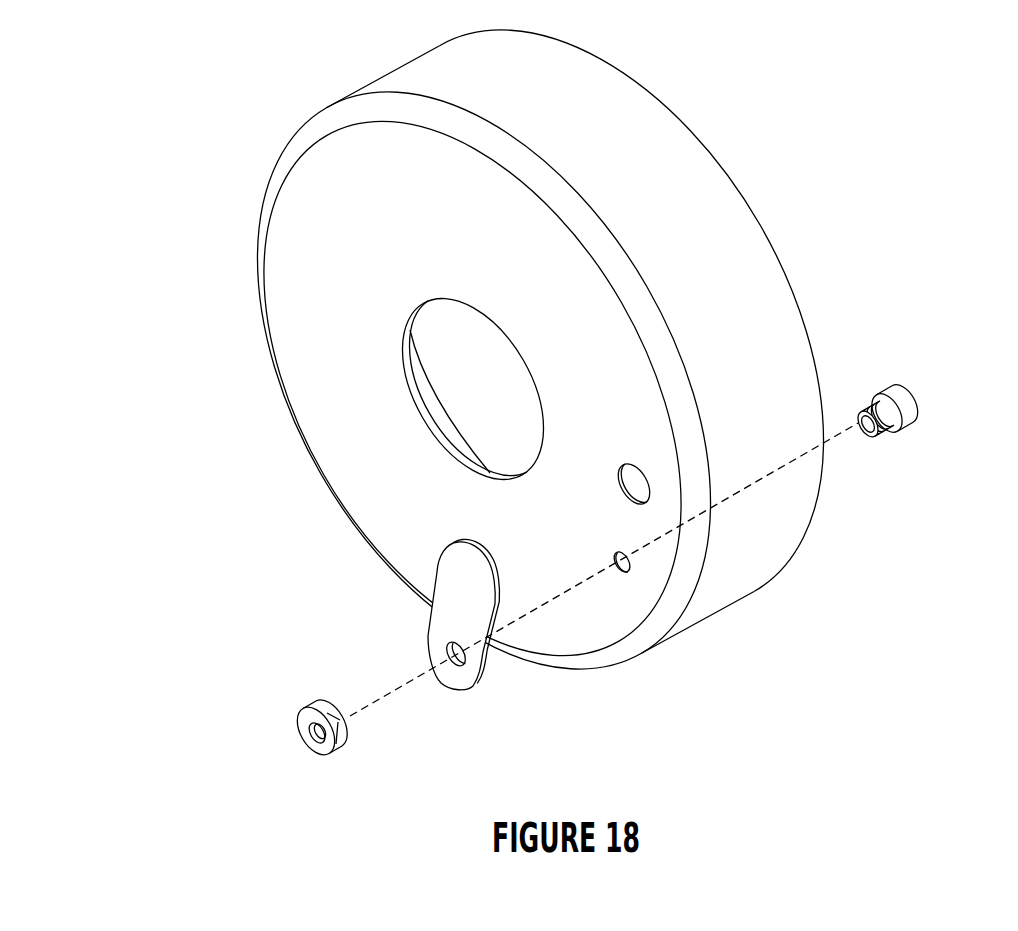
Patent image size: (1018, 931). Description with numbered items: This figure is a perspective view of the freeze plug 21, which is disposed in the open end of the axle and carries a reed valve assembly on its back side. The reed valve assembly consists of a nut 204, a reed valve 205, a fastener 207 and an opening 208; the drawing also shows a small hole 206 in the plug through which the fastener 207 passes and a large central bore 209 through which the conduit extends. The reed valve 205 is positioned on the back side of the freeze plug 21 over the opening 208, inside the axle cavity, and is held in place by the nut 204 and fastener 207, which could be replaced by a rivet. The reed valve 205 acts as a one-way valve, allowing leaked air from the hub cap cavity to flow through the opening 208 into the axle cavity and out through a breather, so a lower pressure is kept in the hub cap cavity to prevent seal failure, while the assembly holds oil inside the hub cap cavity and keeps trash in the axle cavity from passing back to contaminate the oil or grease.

The freeze plug 21 is at (644, 167).
The nut 204 is at (323, 700).
The reed valve 205 is at (480, 677).
The mounting hole 206 is at (630, 572).
The fastener 207 is at (907, 420).
The opening 208 is at (640, 467).
The central bore 209 is at (487, 388).